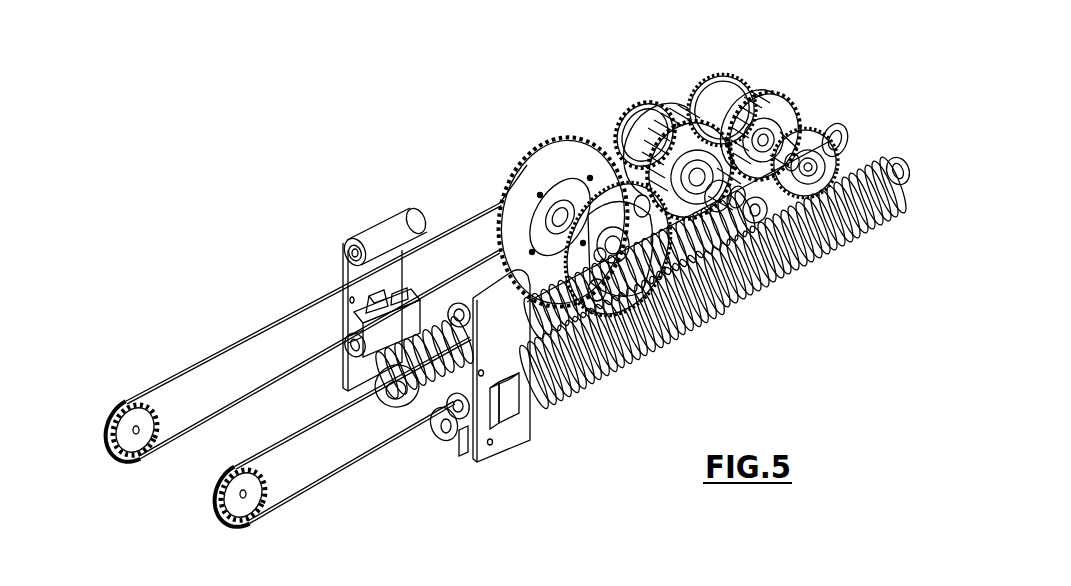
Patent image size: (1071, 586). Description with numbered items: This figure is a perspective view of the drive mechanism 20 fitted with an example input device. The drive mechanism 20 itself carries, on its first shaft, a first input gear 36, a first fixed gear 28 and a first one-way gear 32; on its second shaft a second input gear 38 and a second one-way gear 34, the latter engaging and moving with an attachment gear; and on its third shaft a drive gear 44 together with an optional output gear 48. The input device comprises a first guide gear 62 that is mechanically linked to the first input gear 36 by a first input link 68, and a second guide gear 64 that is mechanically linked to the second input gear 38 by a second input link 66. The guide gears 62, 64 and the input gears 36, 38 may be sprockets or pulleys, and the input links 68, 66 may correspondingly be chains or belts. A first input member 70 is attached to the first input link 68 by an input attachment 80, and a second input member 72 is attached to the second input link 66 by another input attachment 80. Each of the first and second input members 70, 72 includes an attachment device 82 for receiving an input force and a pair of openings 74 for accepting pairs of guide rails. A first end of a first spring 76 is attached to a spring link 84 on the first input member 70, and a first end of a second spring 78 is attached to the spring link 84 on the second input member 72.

The drive mechanism 20 is at (584, 95).
The first fixed gear 28 is at (777, 100).
The first one-way gear 32 is at (738, 84).
The second one-way gear 34 is at (667, 118).
The first input gear 36 is at (811, 132).
The second input gear 38 is at (617, 104).
The drive gear 44 is at (535, 164).
The output gear 48 is at (660, 340).
The first guide gear 62 is at (246, 508).
The second guide gear 64 is at (108, 416).
The second input link 66 is at (184, 363).
The first input link 68 is at (333, 470).
The first input member 70 is at (512, 457).
The second input member 72 is at (386, 215).
The openings 74 is at (343, 263).
The first spring 76 is at (752, 284).
The second spring 78 is at (410, 316).
The input attachment 80 is at (343, 320).
The attachment device 82 is at (510, 405).
The spring link 84 is at (368, 400).